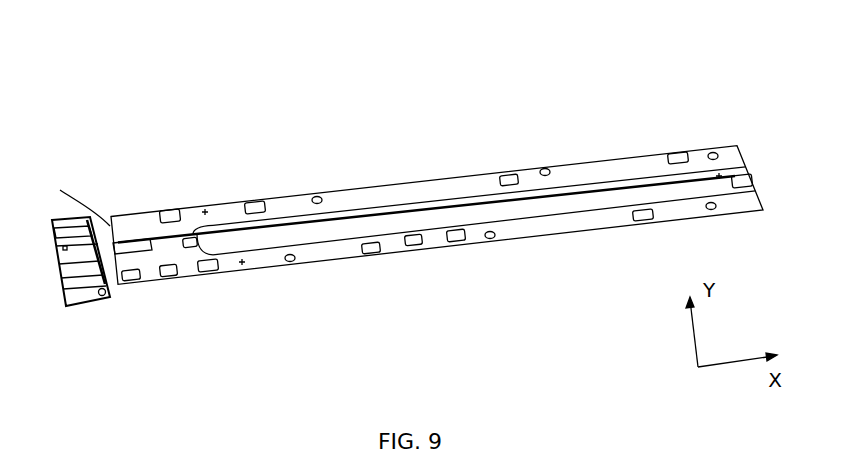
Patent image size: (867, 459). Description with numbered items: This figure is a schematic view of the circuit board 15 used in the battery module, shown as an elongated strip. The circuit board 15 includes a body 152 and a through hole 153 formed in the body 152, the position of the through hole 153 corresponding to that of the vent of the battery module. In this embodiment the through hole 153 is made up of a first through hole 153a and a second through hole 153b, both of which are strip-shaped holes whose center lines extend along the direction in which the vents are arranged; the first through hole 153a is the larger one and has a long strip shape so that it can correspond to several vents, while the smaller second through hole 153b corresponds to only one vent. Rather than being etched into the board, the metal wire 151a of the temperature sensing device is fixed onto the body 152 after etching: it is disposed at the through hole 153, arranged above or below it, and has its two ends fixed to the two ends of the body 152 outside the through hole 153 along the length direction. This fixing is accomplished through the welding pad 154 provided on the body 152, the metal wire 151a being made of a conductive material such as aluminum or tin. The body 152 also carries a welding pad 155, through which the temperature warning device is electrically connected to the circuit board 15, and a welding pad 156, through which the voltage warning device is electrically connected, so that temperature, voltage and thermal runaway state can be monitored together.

The circuit board 15 is at (347, 92).
The metal wire 151a is at (393, 212).
The body 152 is at (588, 168).
The through hole 153 is at (147, 132).
The first through hole 153a is at (283, 200).
The second through hole 153b is at (124, 240).
The welding pad 154 is at (187, 236).
The welding pad 155 is at (507, 176).
The welding pad 156 is at (133, 283).